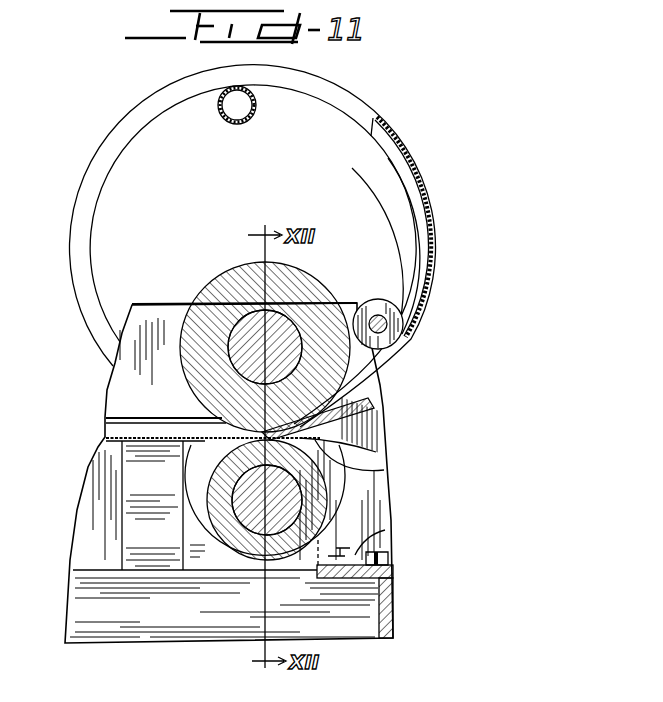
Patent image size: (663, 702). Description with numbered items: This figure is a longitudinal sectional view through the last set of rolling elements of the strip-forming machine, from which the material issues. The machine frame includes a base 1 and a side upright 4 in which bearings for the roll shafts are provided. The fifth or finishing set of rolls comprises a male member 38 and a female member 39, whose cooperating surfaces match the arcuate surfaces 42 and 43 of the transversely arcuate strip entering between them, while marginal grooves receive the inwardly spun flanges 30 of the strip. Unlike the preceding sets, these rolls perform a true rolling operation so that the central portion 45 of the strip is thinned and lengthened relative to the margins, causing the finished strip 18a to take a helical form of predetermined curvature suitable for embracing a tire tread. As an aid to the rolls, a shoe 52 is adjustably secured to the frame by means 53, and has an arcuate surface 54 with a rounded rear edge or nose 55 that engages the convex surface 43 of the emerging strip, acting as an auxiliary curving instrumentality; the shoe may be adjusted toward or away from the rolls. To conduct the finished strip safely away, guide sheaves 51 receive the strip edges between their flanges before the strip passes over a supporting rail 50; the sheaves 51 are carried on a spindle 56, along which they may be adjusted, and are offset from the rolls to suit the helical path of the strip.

The base 1 is at (78, 598).
The side upright 4 is at (92, 505).
The finished strip 18a is at (435, 292).
The flanges 30 is at (416, 237).
The male member 38 is at (292, 277).
The female member 39 is at (245, 577).
The surface of the strip 42 is at (428, 254).
The convex surface of the strip 43 is at (398, 75).
The central portion of the strip 45 is at (432, 226).
The supporting rail 50 is at (256, 112).
The guide sheaves 51 is at (368, 316).
The shoe 52 is at (376, 444).
The adjusting means 53 is at (388, 552).
The arcuate surface 54 is at (362, 404).
The rounded rear edge or nose 55 is at (384, 469).
The spindle 56 is at (381, 316).